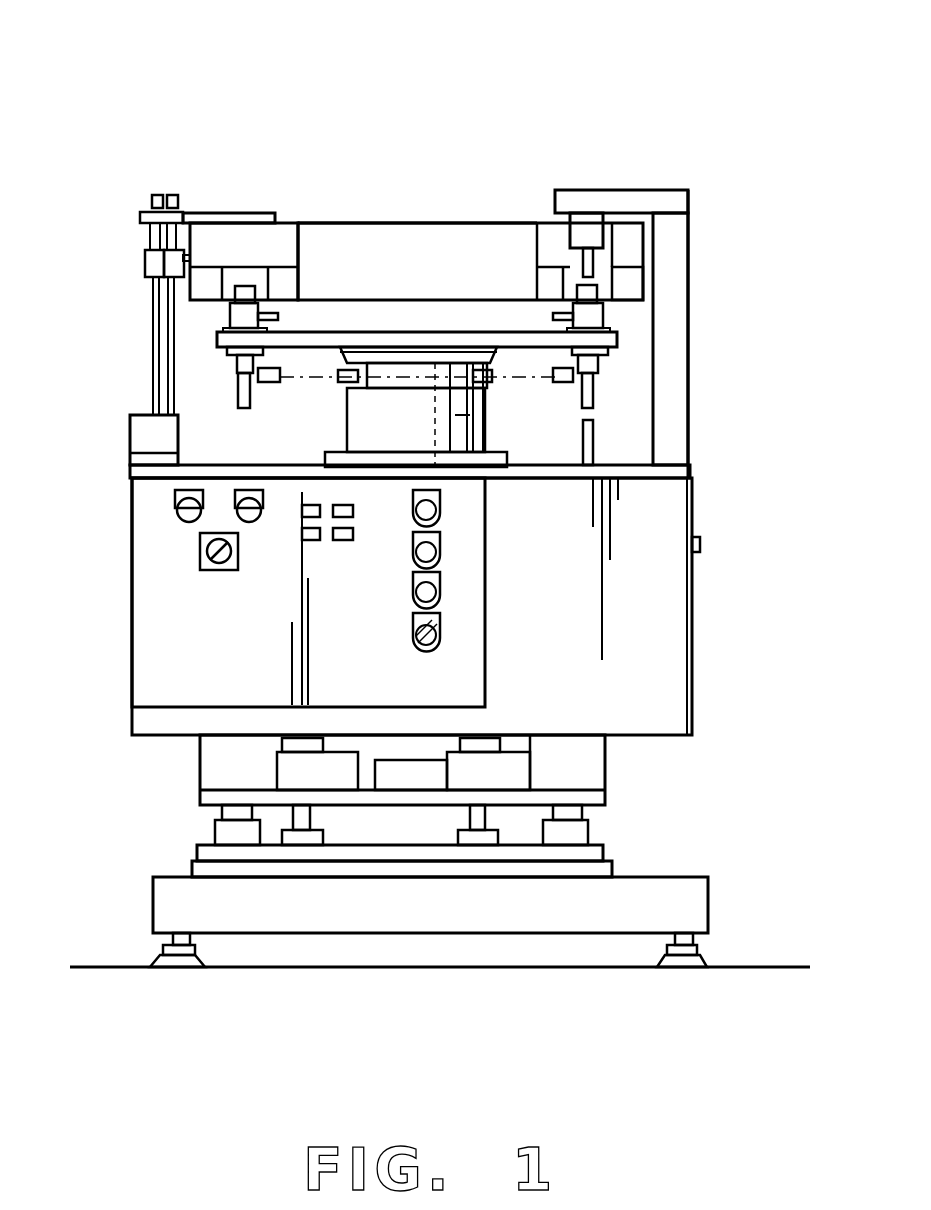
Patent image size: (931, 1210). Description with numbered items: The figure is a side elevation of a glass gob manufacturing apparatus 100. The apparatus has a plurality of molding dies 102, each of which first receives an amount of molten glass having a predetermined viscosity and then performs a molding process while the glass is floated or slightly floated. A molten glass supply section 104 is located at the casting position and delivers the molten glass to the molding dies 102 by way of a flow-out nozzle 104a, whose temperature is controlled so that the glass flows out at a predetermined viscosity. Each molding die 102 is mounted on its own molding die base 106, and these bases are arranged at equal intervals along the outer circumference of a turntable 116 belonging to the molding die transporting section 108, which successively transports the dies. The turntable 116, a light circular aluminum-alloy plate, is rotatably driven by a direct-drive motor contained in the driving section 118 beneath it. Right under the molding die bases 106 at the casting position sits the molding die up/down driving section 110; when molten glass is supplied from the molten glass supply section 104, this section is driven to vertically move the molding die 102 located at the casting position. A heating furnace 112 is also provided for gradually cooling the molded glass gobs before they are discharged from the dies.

The glass gob manufacturing apparatus 100 is at (543, 90).
The molding die 102 is at (243, 293).
The molten glass supply section 104 is at (600, 195).
The flow-out nozzle 104a is at (590, 258).
The molding die base 106 is at (240, 318).
The molding die transporting section 108 is at (440, 318).
The molding die up/down driving section 110 is at (593, 445).
The heating furnace 112 is at (243, 240).
The turntable 116 is at (300, 347).
The driving section 118 is at (470, 415).